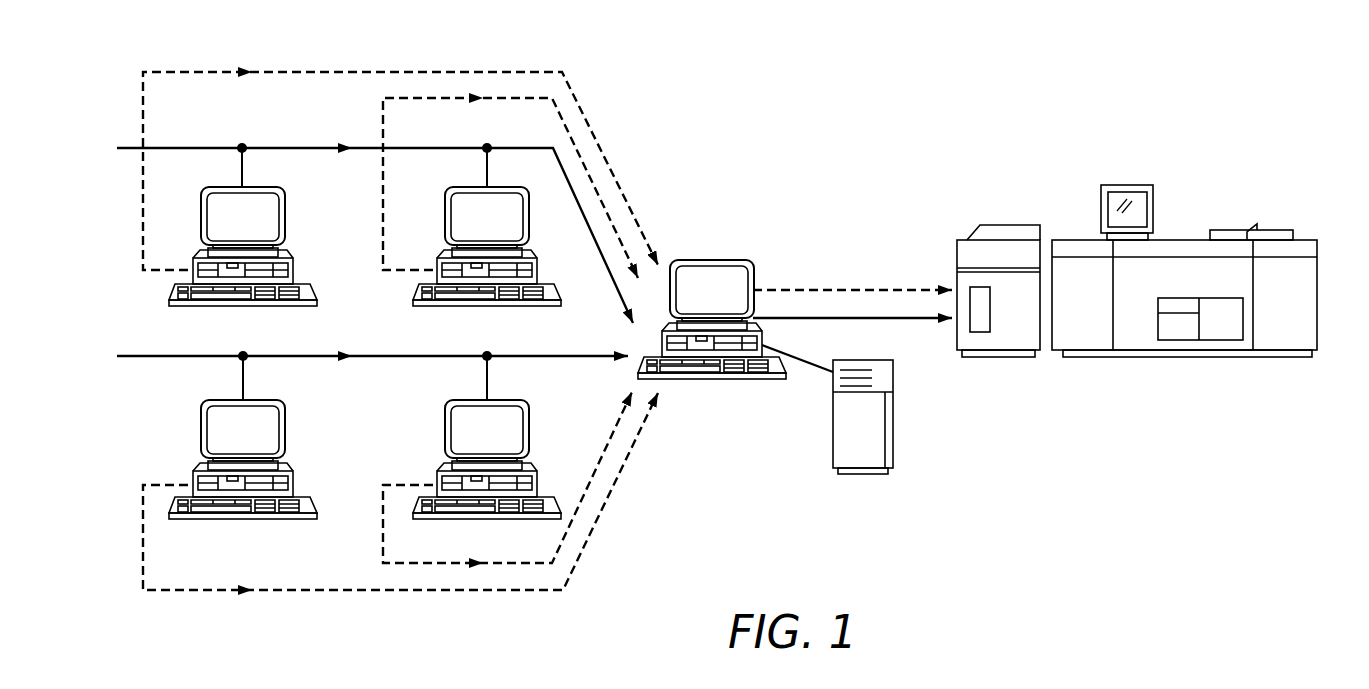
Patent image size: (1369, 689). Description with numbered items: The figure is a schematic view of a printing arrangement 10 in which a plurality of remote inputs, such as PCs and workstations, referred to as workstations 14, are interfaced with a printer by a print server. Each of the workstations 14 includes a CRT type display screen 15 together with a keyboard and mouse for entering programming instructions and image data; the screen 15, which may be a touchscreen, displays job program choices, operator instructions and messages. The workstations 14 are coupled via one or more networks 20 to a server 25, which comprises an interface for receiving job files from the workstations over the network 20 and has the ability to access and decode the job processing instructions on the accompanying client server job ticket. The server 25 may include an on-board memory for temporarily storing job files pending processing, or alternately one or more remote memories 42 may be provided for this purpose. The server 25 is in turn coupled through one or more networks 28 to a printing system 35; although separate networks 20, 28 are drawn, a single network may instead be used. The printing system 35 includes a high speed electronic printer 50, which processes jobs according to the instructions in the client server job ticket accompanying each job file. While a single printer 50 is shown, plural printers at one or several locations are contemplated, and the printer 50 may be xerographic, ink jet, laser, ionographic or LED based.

The printing arrangement 10 is at (704, 134).
The workstations 14 is at (372, 370).
The display screen 15 is at (532, 217).
The network 20 is at (607, 354).
The server 25 is at (710, 262).
The network 28 is at (903, 323).
The printing system 35 is at (1137, 271).
The remote memory 42 is at (833, 426).
The printer 50 is at (1135, 342).